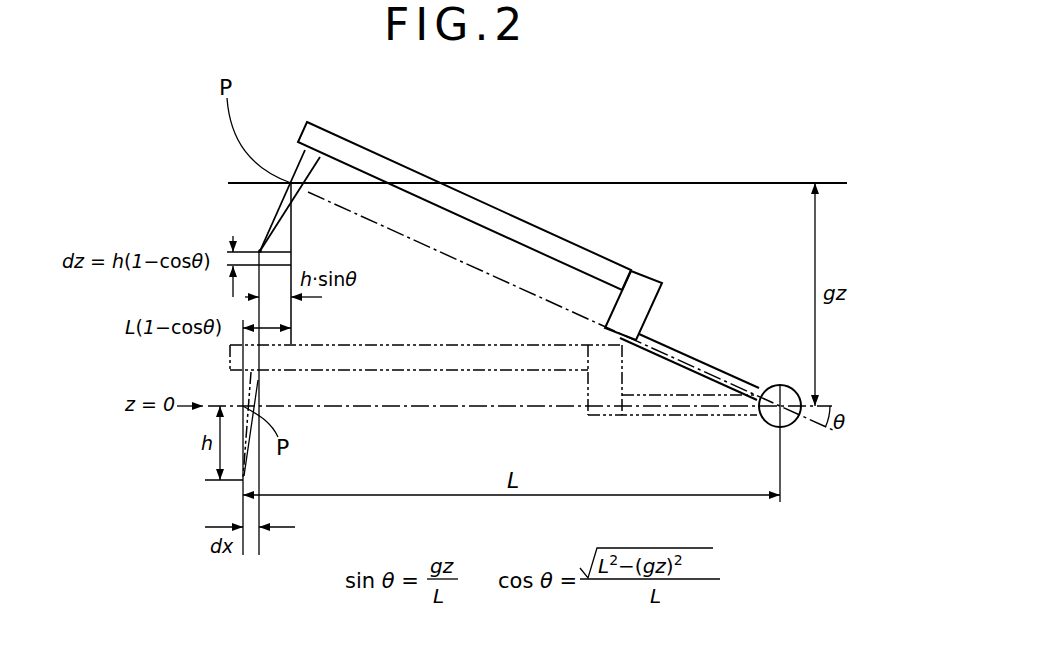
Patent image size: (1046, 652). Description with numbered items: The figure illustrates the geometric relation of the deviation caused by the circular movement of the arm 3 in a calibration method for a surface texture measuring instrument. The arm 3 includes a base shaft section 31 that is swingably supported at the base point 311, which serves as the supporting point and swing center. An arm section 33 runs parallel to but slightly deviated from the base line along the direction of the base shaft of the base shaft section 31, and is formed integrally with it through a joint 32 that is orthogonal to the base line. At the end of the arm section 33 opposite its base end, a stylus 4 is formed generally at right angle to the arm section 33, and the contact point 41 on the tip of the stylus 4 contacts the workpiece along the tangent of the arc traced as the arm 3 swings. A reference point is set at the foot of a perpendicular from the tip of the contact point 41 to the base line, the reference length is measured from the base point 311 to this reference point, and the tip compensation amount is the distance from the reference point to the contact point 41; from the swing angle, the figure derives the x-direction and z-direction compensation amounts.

The arm 3 is at (602, 203).
The base shaft section 31 is at (699, 363).
The base point 311 is at (779, 386).
The joint 32 is at (645, 284).
The arm section 33 is at (363, 154).
The stylus 4 is at (302, 173).
The contact point 41 is at (260, 250).